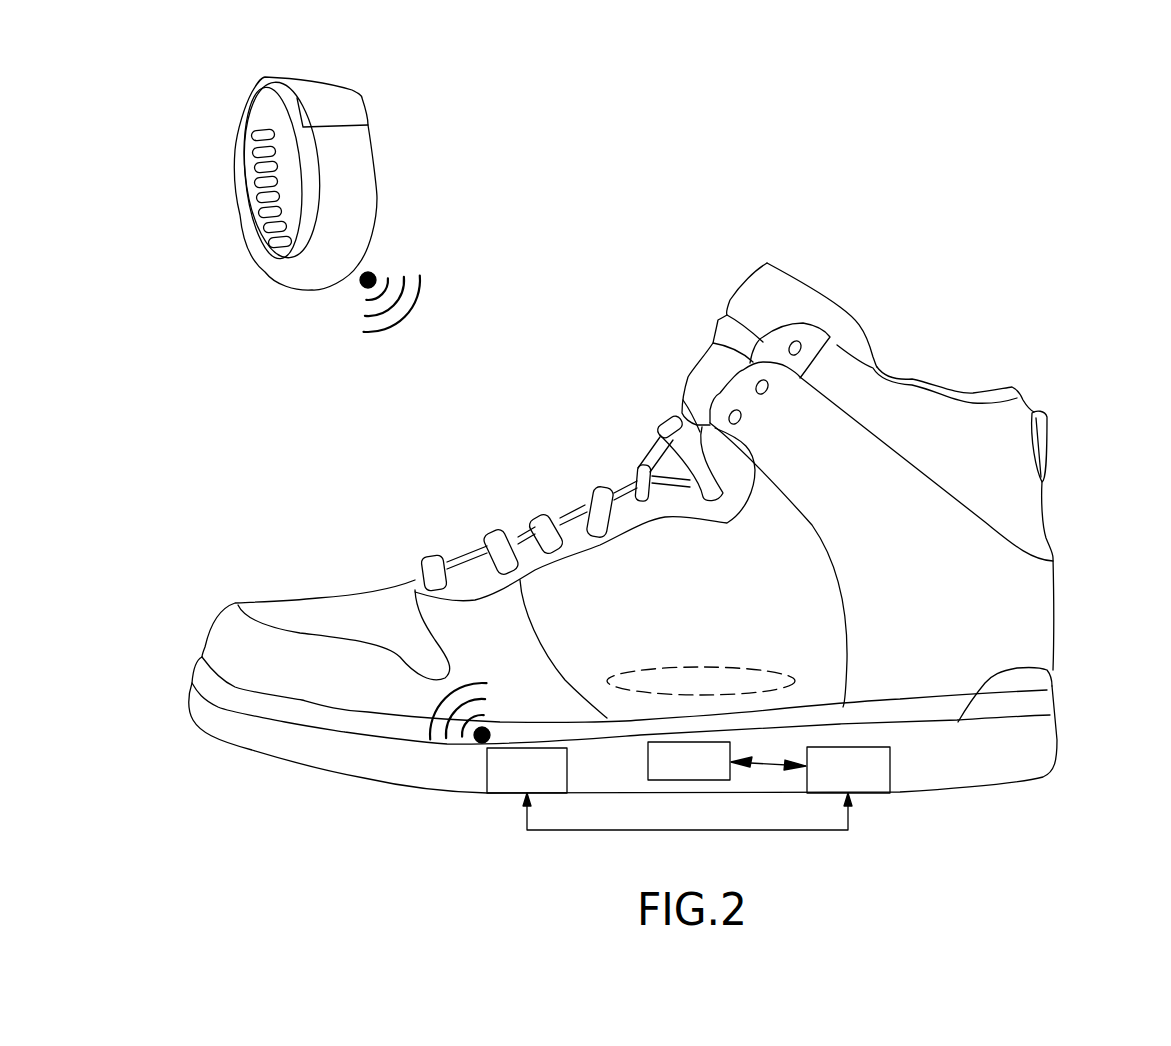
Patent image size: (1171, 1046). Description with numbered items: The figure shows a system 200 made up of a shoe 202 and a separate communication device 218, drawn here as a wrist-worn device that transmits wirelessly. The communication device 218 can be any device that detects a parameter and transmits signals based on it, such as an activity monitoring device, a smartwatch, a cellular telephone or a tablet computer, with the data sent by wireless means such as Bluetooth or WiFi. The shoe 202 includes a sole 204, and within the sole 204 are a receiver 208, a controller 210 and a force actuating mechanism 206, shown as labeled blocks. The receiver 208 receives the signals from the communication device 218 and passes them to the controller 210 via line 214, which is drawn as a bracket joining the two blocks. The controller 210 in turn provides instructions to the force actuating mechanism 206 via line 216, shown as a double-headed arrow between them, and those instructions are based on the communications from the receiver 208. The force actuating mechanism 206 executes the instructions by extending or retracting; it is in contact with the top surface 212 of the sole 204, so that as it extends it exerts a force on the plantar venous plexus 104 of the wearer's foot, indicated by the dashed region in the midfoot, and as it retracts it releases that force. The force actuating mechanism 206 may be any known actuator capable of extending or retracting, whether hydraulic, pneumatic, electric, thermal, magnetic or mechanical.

The system 200 is at (965, 165).
The shoe 202 is at (587, 490).
The sole 204 is at (998, 755).
The force actuating mechanism 206 is at (710, 773).
The receiver 208 is at (549, 784).
The controller 210 is at (870, 783).
The top surface 212 is at (1057, 671).
The line 214 is at (805, 830).
The line 216 is at (770, 763).
The communication device 218 is at (380, 165).
The plantar venous plexus 104 is at (720, 668).